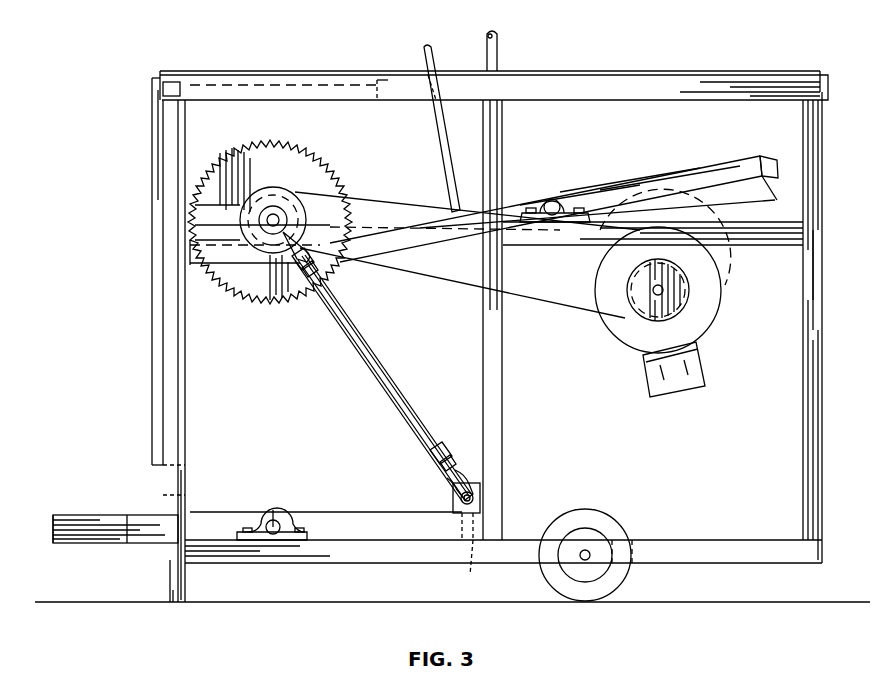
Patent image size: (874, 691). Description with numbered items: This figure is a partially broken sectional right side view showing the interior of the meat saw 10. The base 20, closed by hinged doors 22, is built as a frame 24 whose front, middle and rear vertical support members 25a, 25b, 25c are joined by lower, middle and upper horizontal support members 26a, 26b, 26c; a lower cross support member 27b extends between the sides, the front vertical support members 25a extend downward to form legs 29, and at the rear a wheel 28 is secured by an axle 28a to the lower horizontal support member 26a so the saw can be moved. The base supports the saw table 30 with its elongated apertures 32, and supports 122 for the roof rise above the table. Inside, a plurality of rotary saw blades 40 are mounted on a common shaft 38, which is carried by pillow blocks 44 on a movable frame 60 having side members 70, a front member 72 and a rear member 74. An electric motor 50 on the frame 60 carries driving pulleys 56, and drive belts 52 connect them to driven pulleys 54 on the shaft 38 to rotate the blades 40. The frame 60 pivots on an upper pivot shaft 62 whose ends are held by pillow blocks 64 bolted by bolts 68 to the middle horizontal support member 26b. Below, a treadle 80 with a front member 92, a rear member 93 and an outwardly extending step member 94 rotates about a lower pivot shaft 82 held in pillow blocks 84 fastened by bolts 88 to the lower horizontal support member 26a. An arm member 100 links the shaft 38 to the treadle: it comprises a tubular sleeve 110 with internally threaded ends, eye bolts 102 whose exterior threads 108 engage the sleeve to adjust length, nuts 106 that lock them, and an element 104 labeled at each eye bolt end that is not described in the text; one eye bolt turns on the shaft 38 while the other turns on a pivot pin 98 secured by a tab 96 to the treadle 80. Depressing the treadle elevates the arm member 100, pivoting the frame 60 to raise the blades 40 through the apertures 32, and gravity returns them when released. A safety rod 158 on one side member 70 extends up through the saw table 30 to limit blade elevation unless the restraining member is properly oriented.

The meat saw 10 is at (829, 406).
The base 20 is at (154, 166).
The doors 22 is at (152, 428).
The frame 24 is at (821, 155).
The front vertical support member 25a is at (184, 420).
The middle vertical support member 25b is at (503, 430).
The rear vertical support member 25c is at (822, 324).
The lower horizontal support member 26a is at (706, 546).
The middle horizontal support member 26b is at (820, 240).
The upper horizontal support member 26c is at (822, 91).
The lower cross support member 27b is at (168, 486).
The wheels 28 is at (570, 508).
The axles 28a is at (588, 550).
The legs 29 is at (181, 578).
The saw table 30 is at (306, 72).
The apertures 32 is at (236, 70).
The shaft 38 is at (276, 216).
The saw blades 40 is at (322, 168).
The pillow blocks 44 is at (217, 220).
The electric motor 50 is at (712, 298).
The drive belts 52 is at (529, 266).
The driven pulleys 54 is at (254, 180).
The driving pulleys 56 is at (691, 282).
The movable frame 60 is at (174, 258).
The upper pivot shaft 62 is at (546, 206).
The pillow blocks 64 is at (564, 206).
The bolts 68 is at (528, 208).
The side members 70 is at (646, 176).
The front member 72 is at (216, 290).
The rear member 74 is at (768, 156).
The treadle 80 is at (76, 538).
The lower pivot shaft 82 is at (272, 526).
The pillow blocks 84 is at (258, 528).
The bolts 88 is at (244, 530).
The front member 92 is at (120, 520).
The rear member 93 is at (472, 575).
The step member 94 is at (52, 530).
The tab 96 is at (454, 506).
The pivot pin 98 is at (474, 496).
The arm member 100 is at (389, 372).
The eye bolts 102 is at (272, 262).
The pin 104 is at (274, 240).
The nuts 106 is at (333, 268).
The exterior threads 108 is at (312, 300).
The sleeve 110 is at (359, 339).
The supports 122 is at (497, 44).
The safety rod 158 is at (445, 141).